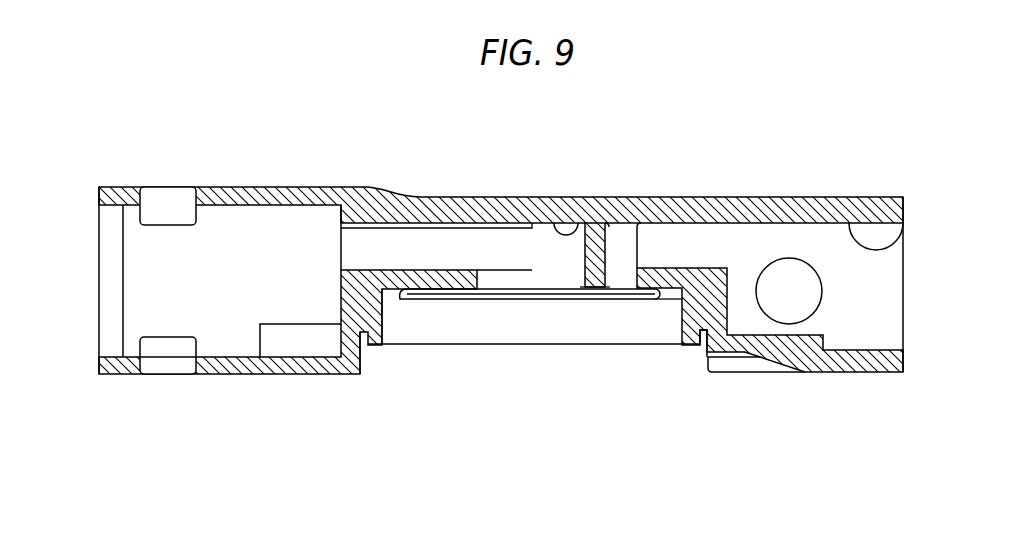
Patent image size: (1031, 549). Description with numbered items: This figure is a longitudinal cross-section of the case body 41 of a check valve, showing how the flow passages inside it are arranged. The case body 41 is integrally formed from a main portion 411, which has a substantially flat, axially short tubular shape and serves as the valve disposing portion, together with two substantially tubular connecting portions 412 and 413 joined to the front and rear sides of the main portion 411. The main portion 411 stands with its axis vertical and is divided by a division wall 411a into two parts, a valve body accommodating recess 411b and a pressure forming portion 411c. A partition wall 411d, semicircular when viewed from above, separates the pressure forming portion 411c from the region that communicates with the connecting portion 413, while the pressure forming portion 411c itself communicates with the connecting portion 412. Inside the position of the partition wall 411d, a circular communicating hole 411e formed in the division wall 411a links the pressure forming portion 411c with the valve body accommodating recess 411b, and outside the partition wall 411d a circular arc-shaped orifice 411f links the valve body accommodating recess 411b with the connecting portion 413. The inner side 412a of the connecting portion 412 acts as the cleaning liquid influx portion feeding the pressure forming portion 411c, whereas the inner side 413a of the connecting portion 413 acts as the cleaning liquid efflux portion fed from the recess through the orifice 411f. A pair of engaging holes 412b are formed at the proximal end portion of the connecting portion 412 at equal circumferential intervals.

The case body 41 is at (308, 188).
The main portion 411 is at (537, 197).
The division wall 411a is at (435, 270).
The valve body accommodating recess 411b is at (383, 328).
The pressure forming portion 411c is at (577, 228).
The partition wall 411d is at (608, 250).
The communicating hole 411e is at (480, 289).
The orifice 411f is at (607, 283).
The connecting portion 412 is at (254, 188).
The inner side of the connecting portion 412 412a is at (216, 356).
The engaging holes 412b is at (153, 188).
The connecting portion 413 is at (780, 197).
The inner side of the connecting portion 413 413a is at (880, 245).